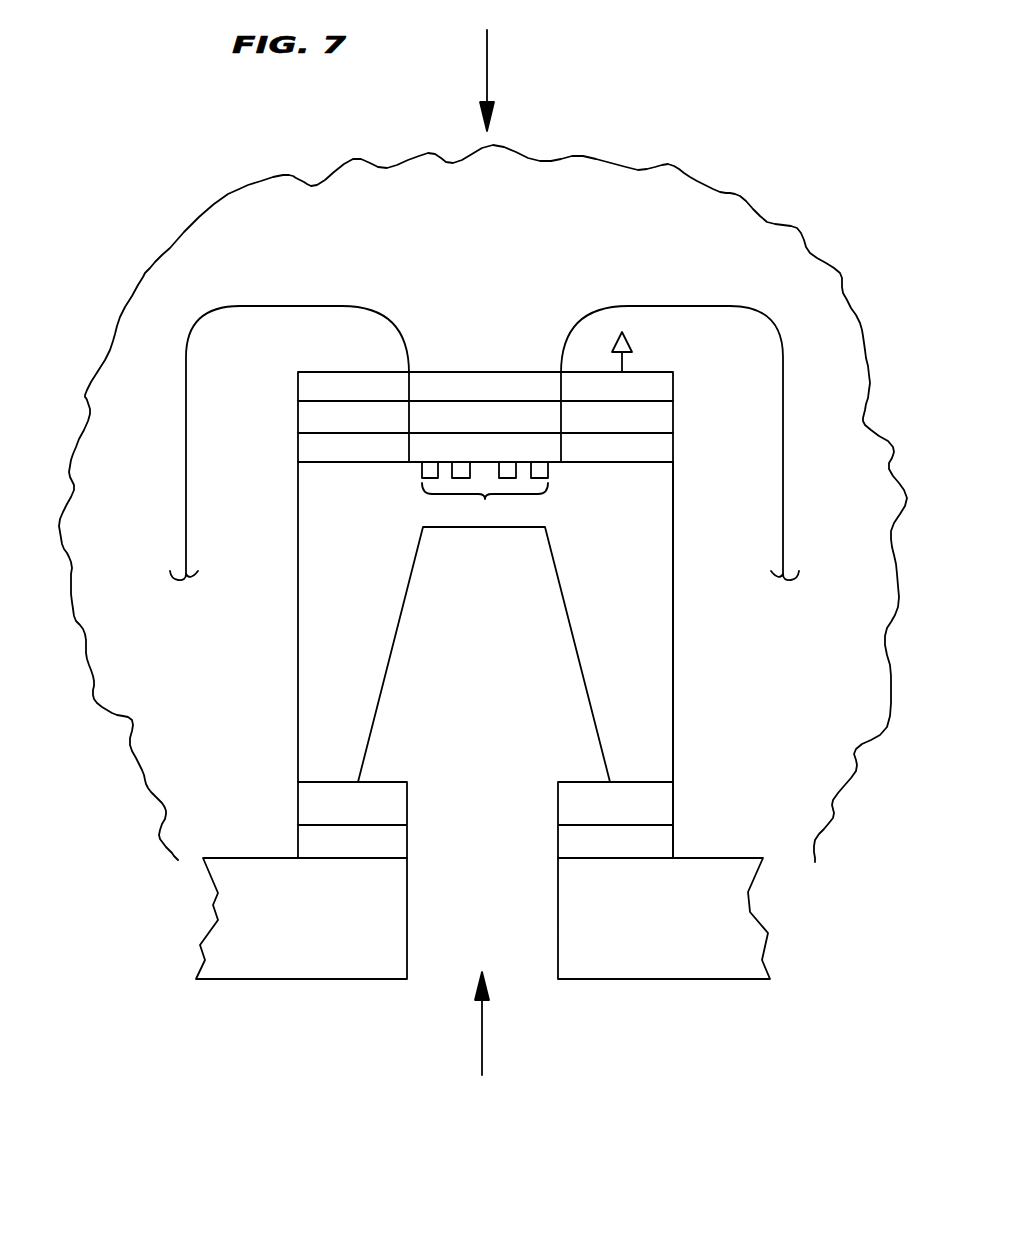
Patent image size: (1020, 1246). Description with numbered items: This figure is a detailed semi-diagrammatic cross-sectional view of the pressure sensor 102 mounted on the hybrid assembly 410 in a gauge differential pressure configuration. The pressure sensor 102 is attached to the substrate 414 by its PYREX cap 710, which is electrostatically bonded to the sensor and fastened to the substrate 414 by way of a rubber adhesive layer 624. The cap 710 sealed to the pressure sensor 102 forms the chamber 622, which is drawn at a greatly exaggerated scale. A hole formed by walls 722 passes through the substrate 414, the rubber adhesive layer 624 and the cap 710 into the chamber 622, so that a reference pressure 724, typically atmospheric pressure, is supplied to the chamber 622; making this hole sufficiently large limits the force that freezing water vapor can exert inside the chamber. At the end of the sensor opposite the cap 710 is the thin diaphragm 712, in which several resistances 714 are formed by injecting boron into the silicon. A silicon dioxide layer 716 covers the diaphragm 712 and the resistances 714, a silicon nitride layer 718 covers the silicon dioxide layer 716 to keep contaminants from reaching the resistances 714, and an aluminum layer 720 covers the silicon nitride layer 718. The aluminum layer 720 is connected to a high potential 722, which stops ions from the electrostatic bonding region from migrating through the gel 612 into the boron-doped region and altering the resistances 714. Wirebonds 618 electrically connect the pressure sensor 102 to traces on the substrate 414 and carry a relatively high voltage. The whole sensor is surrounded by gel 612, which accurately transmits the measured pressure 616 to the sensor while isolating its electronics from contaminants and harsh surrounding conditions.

The pressure sensor 102 is at (652, 676).
The hybrid assembly 410 is at (220, 937).
The substrate 414 is at (760, 930).
The gel 612 is at (778, 245).
The pressure 616 is at (487, 68).
The wirebonds 618 is at (576, 326).
The chamber 622 is at (420, 665).
The rubber adhesive layer 624 is at (663, 843).
The cap 710 is at (306, 798).
The diaphragm 712 is at (358, 487).
The resistances 714 is at (485, 499).
The silicon dioxide layer 716 is at (303, 445).
The silicon nitride layer 718 is at (303, 417).
The aluminum layer 720 is at (328, 378).
The walls / high potential 722 is at (630, 344).
The reference pressure 724 is at (482, 1047).